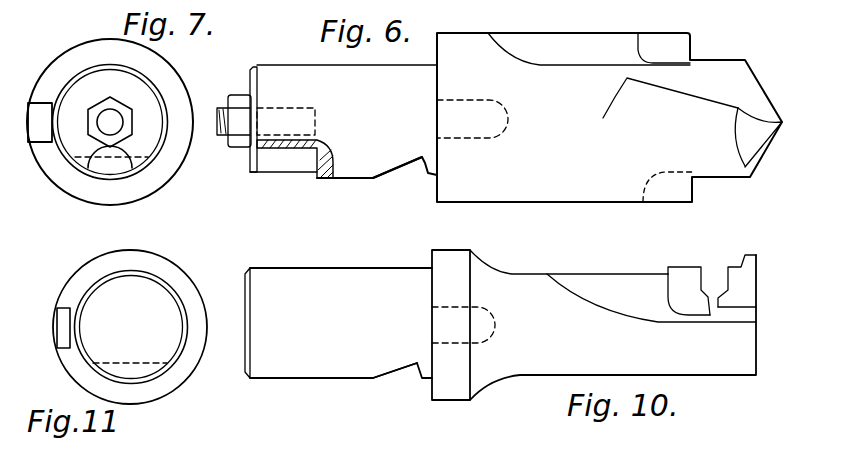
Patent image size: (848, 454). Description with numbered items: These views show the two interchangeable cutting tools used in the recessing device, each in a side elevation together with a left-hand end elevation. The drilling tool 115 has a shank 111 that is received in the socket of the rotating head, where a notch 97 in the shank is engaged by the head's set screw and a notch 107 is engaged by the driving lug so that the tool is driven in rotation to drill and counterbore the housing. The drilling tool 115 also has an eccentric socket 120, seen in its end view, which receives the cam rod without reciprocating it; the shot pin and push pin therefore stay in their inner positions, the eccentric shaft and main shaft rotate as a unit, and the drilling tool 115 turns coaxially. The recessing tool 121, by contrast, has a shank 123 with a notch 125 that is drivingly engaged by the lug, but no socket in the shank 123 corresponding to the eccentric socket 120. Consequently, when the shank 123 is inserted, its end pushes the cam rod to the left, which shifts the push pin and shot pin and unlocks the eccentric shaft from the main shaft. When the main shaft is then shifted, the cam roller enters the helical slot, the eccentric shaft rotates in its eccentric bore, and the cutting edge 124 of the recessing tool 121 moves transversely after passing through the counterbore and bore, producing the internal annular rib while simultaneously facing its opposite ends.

In FIG. 6, the notch 97 is at (397, 168).
In FIG. 10, the notch 97 is at (395, 378).
In FIG. 7, the notch 107 is at (28, 112).
In FIG. 6, the notch 107 is at (477, 103).
In FIG. 7, the shank 111 is at (148, 85).
In FIG. 6, the shank 111 is at (282, 65).
In FIG. 7, the drilling tool 115 is at (87, 35).
In FIG. 6, the drilling tool 115 is at (473, 33).
In FIG. 7, the eccentric socket 120 is at (90, 168).
In FIG. 6, the eccentric socket 120 is at (270, 147).
In FIG. 10, the recessing tool 121 is at (512, 274).
In FIG. 10, the shank 123 is at (378, 278).
In FIG. 11, the shank 123 is at (157, 300).
In FIG. 10, the cutting edge 124 is at (703, 276).
In FIG. 10, the notch 125 is at (497, 311).
In FIG. 11, the notch 125 is at (57, 313).